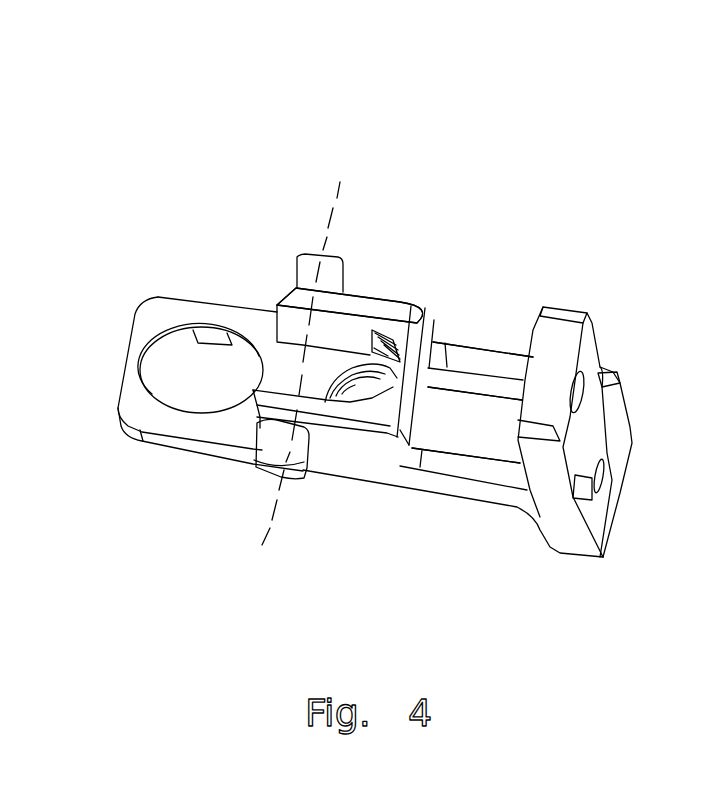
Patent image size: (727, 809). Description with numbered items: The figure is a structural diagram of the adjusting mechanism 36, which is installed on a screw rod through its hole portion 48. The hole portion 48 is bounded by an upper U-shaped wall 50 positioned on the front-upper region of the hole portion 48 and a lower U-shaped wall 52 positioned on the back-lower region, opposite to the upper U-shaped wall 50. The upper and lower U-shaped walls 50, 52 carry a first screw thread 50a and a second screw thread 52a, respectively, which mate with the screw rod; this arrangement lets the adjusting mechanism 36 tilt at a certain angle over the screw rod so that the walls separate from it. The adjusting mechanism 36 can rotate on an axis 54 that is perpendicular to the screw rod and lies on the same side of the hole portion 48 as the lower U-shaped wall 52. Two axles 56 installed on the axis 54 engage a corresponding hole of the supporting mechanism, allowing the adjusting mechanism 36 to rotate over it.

The adjusting mechanism 36 is at (143, 72).
The hole portion 48 is at (351, 306).
The upper U-shaped wall 50 is at (410, 340).
The first screw thread 50a is at (390, 340).
The lower U-shaped wall 52 is at (330, 352).
The second screw thread 52a is at (330, 372).
The axis 54 is at (260, 517).
The axles 56 is at (282, 450).